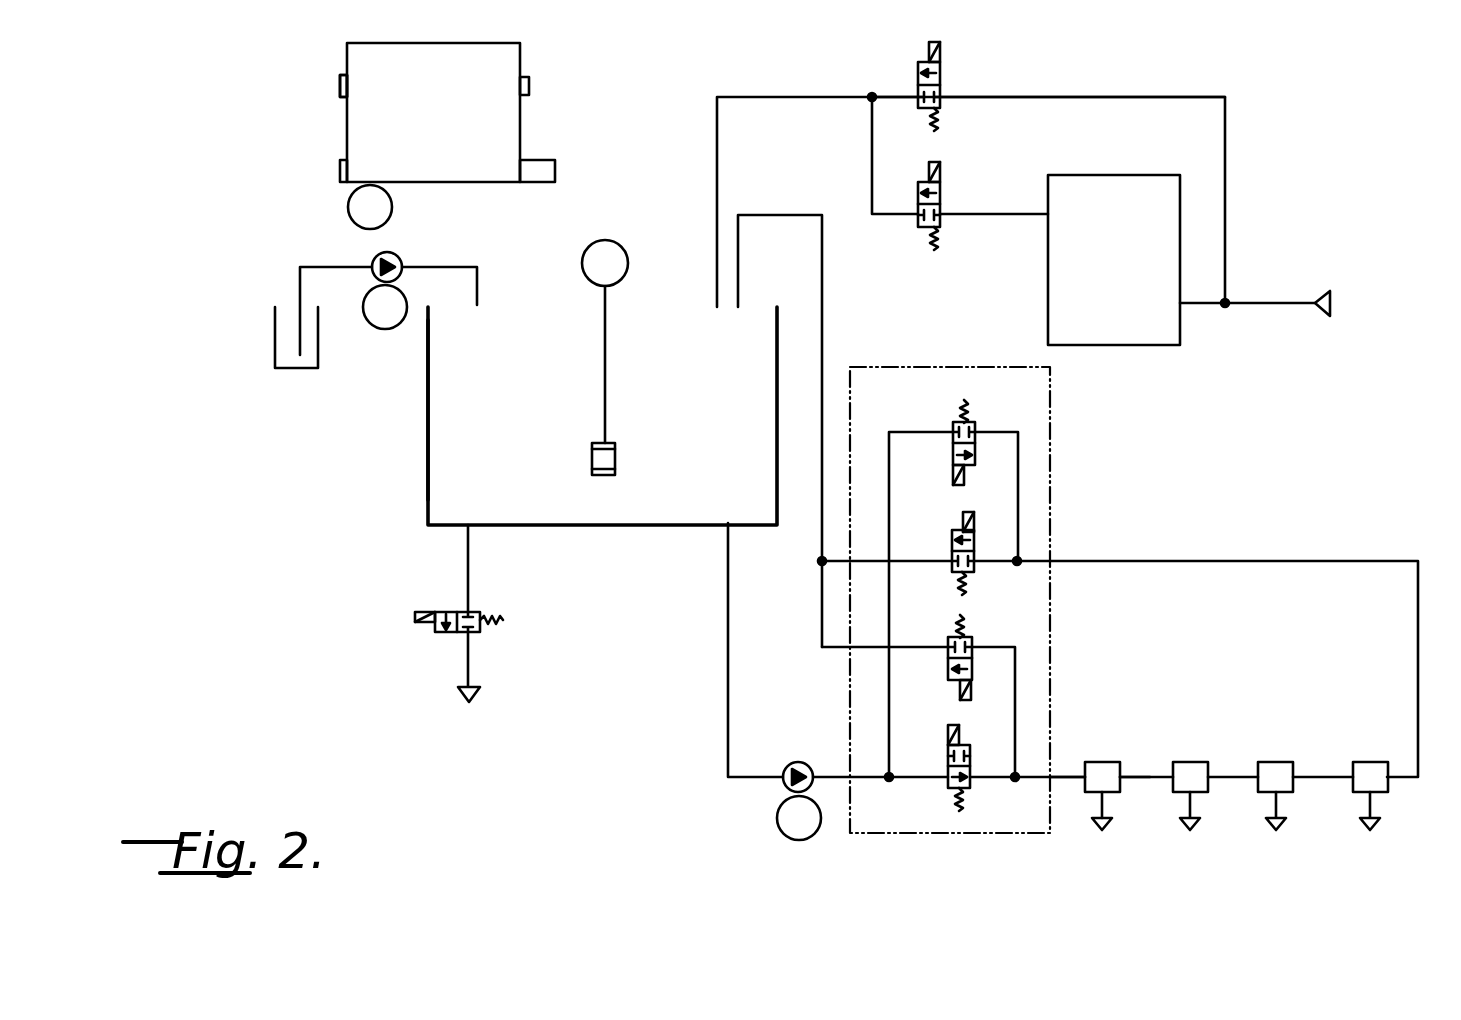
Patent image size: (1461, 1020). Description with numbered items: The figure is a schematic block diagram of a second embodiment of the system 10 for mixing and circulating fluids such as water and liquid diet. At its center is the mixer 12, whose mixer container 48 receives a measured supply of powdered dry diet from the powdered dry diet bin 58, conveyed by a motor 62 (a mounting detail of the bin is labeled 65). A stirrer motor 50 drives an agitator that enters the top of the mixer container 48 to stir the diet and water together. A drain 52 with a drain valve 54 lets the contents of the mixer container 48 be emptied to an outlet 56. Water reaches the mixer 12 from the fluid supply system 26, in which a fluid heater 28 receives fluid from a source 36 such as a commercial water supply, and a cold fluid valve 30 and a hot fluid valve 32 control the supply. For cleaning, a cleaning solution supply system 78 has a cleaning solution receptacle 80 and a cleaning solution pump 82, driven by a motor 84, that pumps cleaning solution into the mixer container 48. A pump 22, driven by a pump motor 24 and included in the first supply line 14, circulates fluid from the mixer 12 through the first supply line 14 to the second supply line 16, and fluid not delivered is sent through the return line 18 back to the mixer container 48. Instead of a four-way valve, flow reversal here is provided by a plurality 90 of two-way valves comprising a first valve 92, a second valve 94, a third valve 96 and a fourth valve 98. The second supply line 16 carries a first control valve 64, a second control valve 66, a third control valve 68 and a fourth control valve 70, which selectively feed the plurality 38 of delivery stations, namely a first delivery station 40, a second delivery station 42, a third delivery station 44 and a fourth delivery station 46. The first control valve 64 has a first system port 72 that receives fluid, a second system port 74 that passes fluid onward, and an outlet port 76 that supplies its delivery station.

The system 10 is at (592, 812).
The mixer 12 is at (392, 517).
The first supply line 14 is at (718, 745).
The second supply line 16 is at (1208, 562).
The return line 18 is at (823, 335).
The pump 22 is at (803, 742).
The pump motor 24 is at (790, 839).
The fluid supply system 26 is at (1242, 211).
The fluid heater 28 is at (1145, 347).
The cold fluid valve 30 is at (941, 70).
The hot fluid valve 32 is at (941, 190).
The source of fluid 36 is at (1330, 308).
The plurality of delivery stations 38 is at (1240, 876).
The first delivery station 40 is at (1102, 831).
The second delivery station 42 is at (1190, 831).
The third delivery station 44 is at (1276, 831).
The fourth delivery station 46 is at (1370, 831).
The mixer container 48 is at (428, 452).
The stirrer motor 50 is at (628, 262).
The drain 52 is at (470, 528).
The drain valve 54 is at (482, 632).
The outlet 56 is at (460, 700).
The powdered dry diet bin 58 is at (545, 113).
The motor 62 is at (348, 207).
The first control valve 64 is at (1102, 762).
The dispenser mounting 65 is at (345, 130).
The second control valve 66 is at (1190, 762).
The third control valve 68 is at (1276, 762).
The fourth control valve 70 is at (1370, 762).
The first system port 72 is at (1083, 777).
The second system port 74 is at (1122, 777).
The outlet port 76 is at (1104, 800).
The cleaning solution supply system 78 is at (268, 378).
The cleaning solution receptacle 80 is at (275, 340).
The cleaning solution pump 82 is at (400, 258).
The motor 84 is at (404, 328).
The plurality of two-way valves 90 is at (1048, 512).
The first valve 92 is at (953, 458).
The second valve 94 is at (952, 545).
The third valve 96 is at (948, 670).
The fourth valve 98 is at (948, 765).